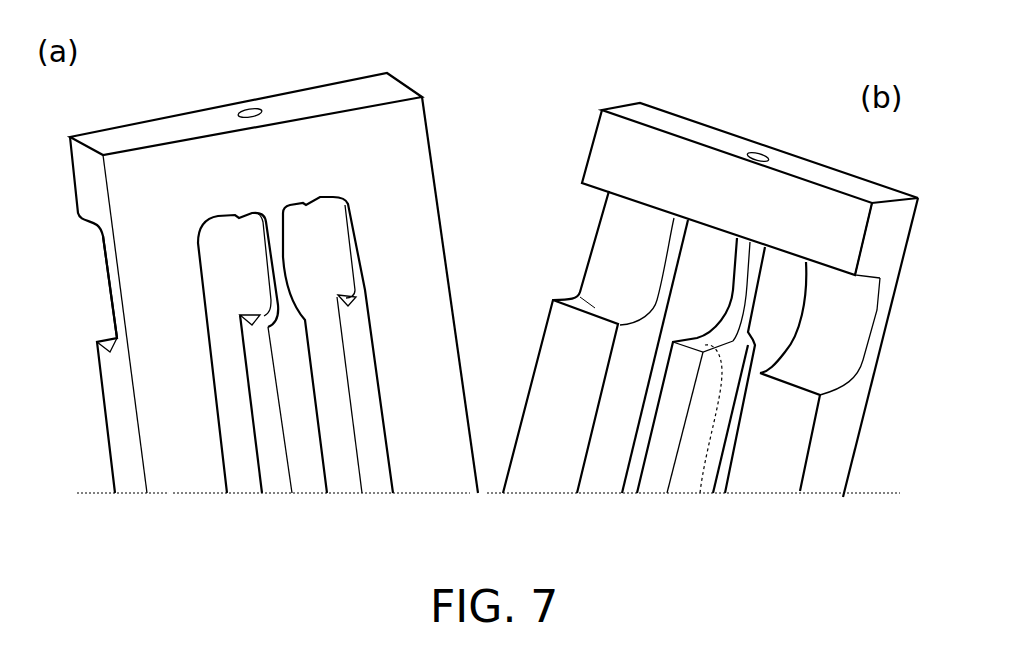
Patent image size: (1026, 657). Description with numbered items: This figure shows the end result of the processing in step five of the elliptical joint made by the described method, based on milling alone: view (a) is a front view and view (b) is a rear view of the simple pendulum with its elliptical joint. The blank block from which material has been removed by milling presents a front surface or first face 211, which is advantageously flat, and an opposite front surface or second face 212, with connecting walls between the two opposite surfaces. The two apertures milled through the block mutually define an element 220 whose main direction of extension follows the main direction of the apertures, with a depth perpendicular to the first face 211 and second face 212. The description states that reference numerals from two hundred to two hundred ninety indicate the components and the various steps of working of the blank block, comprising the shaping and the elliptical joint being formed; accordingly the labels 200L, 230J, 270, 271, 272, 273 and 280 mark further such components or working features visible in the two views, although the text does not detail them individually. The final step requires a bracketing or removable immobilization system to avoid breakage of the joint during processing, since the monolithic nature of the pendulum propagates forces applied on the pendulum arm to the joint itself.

The connector bracket assembly 200L is at (662, 98).
The front surface (first face) 211 is at (357, 164).
The front surface (second face) 212 is at (73, 182).
The element 220 is at (307, 467).
The joint portion 230J is at (737, 265).
The fixing portion 270 is at (97, 311).
The step portion 271 is at (808, 380).
The shoulder portion 272 is at (580, 295).
The hidden leg portion 273 is at (698, 494).
The hole 280 is at (247, 107).